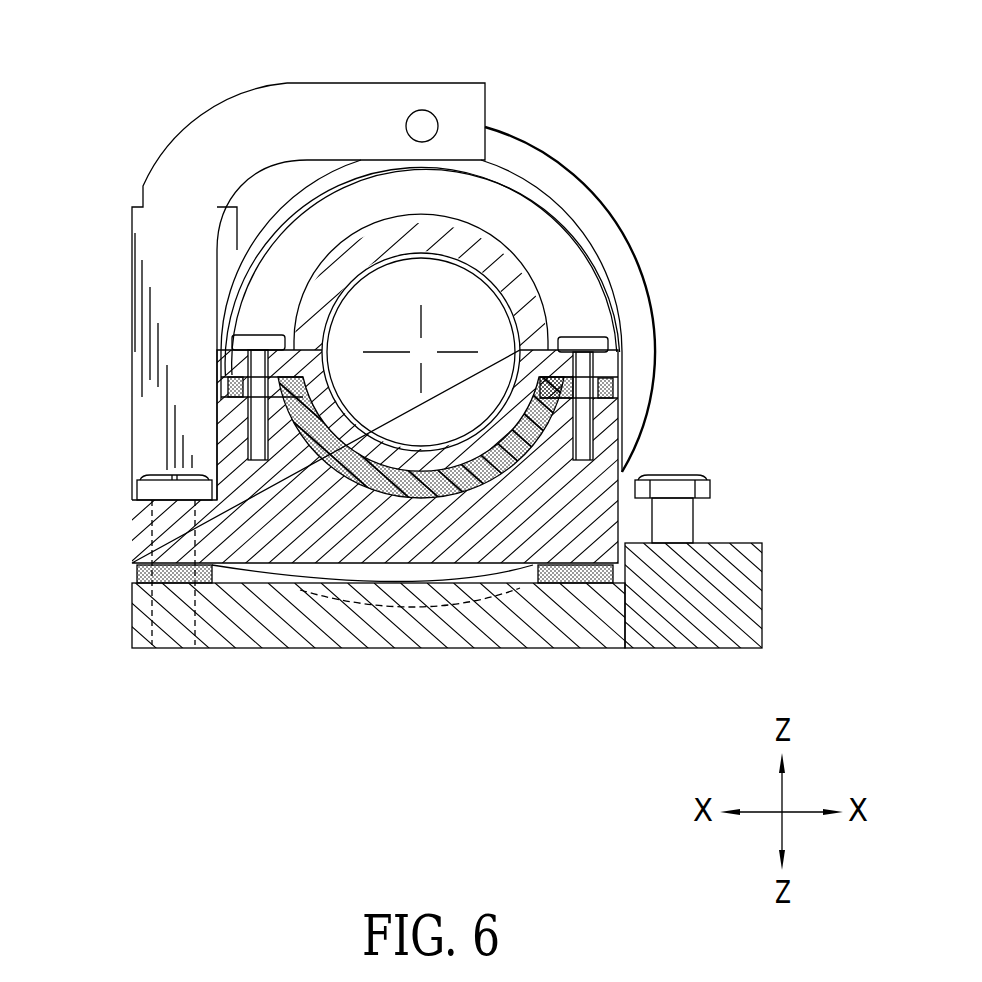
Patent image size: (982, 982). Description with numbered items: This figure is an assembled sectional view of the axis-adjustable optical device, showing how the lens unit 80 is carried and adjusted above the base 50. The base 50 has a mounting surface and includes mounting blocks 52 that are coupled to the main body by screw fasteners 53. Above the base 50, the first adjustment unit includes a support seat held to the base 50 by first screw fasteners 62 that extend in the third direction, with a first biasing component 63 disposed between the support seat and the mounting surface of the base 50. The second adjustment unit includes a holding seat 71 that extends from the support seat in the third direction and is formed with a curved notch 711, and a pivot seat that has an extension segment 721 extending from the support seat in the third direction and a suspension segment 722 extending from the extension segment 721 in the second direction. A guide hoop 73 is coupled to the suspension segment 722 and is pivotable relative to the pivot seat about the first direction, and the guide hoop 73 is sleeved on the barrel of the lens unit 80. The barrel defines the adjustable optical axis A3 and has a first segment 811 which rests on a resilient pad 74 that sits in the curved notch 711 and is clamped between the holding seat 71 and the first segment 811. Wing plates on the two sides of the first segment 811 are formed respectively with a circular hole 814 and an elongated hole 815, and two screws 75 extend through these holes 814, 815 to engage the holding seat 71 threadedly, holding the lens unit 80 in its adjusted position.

The base 50 is at (460, 635).
The mounting block 52 is at (735, 553).
The screw fastener 53 is at (682, 520).
The first screw fastener 62 is at (146, 487).
The first biasing component 63 is at (165, 571).
The holding seat 71 is at (380, 545).
The curved notch 711 is at (505, 473).
The extension segment 721 is at (152, 381).
The suspension segment 722 is at (416, 92).
The guide hoop 73 is at (562, 179).
The resilient pad 74 is at (612, 389).
The screw 75 is at (262, 338).
The lens unit 80 is at (516, 176).
The first segment 811 is at (503, 270).
The circular hole 814 is at (597, 368).
The elongated hole 815 is at (232, 373).
The adjustable optical axis A3 is at (421, 353).